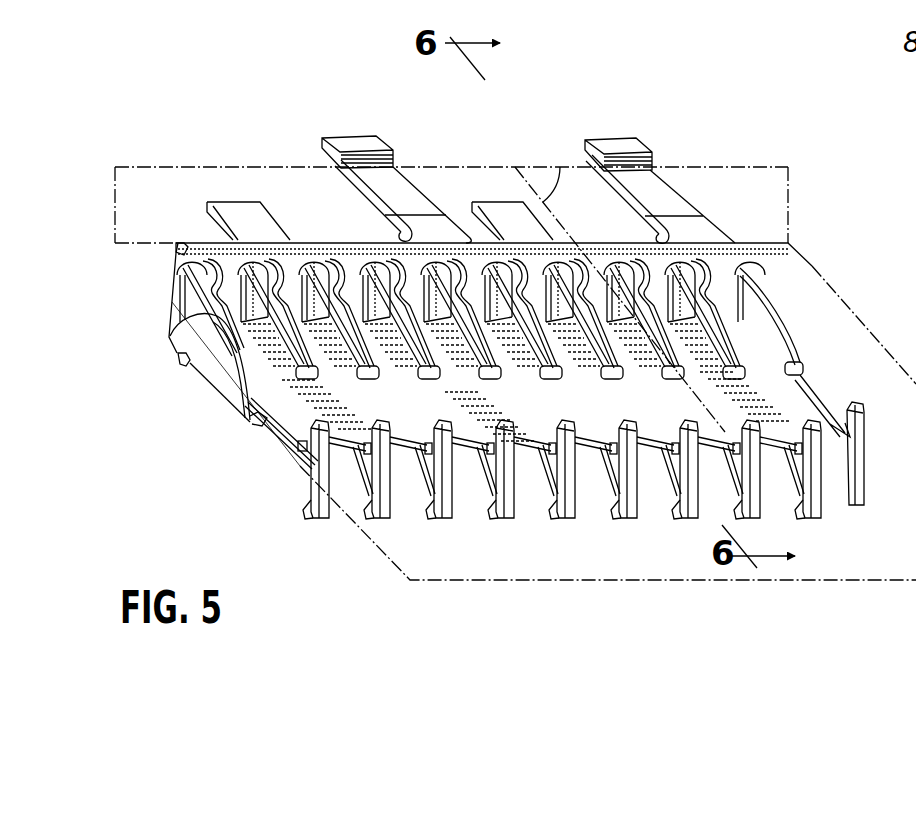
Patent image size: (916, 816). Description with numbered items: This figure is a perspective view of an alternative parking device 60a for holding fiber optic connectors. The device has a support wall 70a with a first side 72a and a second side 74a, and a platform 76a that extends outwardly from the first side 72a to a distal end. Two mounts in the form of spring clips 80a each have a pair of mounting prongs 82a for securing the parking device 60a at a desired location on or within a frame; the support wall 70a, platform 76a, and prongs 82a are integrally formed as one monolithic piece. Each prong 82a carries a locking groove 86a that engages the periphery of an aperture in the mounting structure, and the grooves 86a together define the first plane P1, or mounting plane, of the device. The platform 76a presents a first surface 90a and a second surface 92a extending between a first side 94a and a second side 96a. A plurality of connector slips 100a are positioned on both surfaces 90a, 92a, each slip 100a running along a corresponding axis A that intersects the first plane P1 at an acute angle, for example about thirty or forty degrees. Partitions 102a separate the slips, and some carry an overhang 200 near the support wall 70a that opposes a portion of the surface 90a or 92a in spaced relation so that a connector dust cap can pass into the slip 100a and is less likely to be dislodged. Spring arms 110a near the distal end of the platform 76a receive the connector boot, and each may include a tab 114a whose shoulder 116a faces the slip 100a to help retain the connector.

The parking device 60a is at (203, 398).
The support wall 70a is at (179, 241).
The first side 72a is at (214, 302).
The second side 74a is at (312, 243).
The platform 76a is at (276, 448).
The spring clip 80a is at (374, 137).
The mounting prong 82a is at (611, 139).
The locking groove 86a is at (647, 152).
The first surface 90a is at (601, 415).
The second surface 92a is at (380, 506).
The first side 94a is at (258, 419).
The second side 96a is at (820, 396).
The connector slip 100a is at (473, 432).
The partition 102a is at (214, 314).
The spring arm 110a is at (320, 520).
The tab 114a is at (627, 521).
The shoulder 116a is at (597, 488).
The overhang 200 is at (282, 278).
The first plane P1 is at (790, 182).
The axis A is at (701, 400).